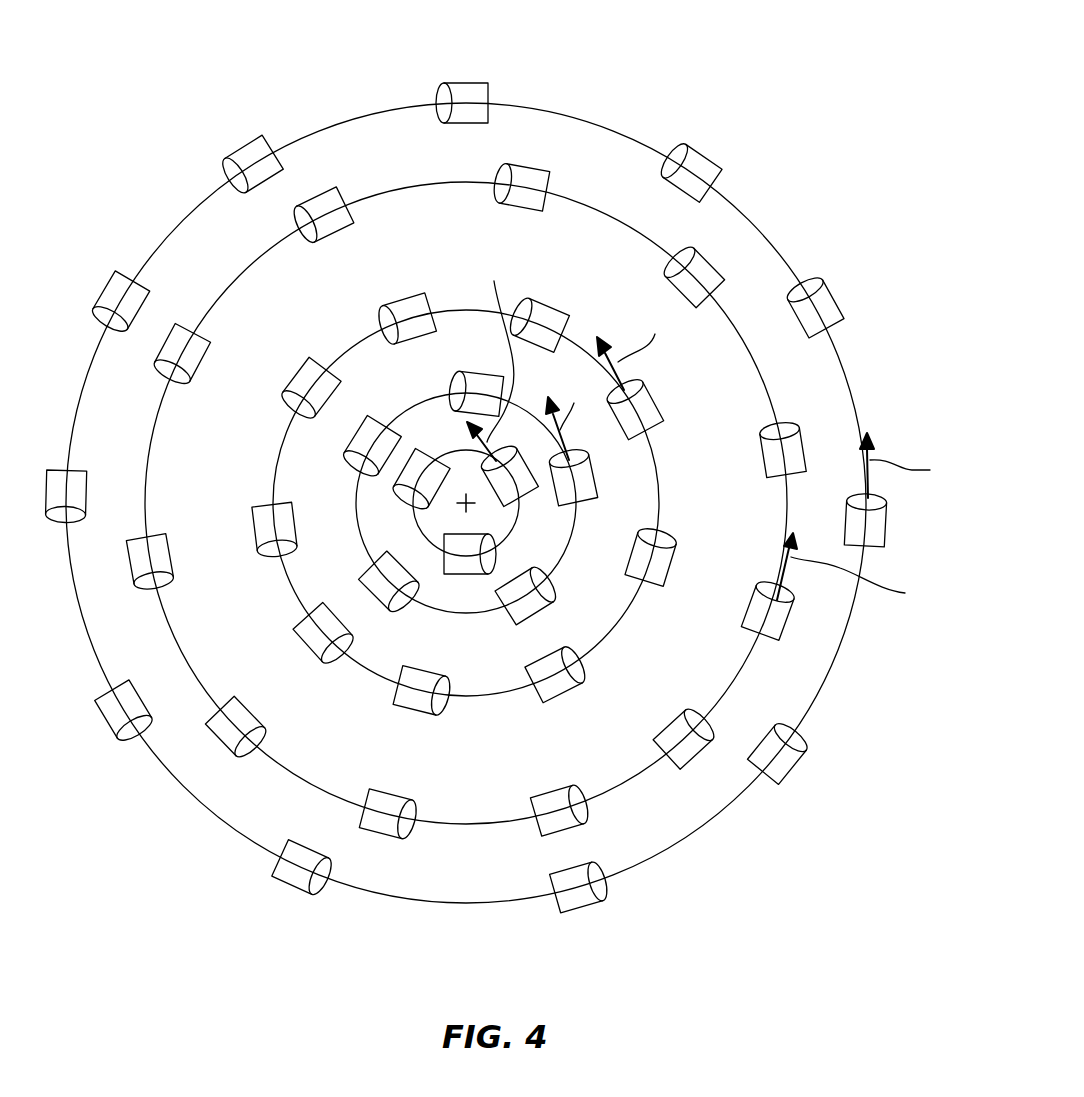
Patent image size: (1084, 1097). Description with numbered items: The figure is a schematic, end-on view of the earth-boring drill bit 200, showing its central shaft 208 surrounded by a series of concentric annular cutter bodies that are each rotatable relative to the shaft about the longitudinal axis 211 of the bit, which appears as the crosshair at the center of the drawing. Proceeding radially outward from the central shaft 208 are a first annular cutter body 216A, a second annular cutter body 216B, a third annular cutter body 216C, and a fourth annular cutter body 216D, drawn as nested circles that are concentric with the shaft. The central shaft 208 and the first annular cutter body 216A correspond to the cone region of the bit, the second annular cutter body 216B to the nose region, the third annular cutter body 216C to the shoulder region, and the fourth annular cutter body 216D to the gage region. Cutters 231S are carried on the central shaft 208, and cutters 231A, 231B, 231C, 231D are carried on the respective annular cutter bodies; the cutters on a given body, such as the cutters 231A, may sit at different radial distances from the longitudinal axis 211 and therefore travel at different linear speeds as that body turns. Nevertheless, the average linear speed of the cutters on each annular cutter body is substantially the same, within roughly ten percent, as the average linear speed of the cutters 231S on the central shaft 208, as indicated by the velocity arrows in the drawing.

The drill bit 200 is at (646, 101).
The central shaft 208 is at (411, 520).
The longitudinal axis 211 is at (462, 496).
The cutters on the central shaft 231S is at (398, 492).
The first annular cutter body 216A is at (563, 562).
The cutters on the first annular cutter body 231A is at (518, 610).
The second annular cutter body 216B is at (288, 597).
The cutters on the second annular cutter body 231B is at (545, 683).
The third annular cutter body 216C is at (310, 786).
The cutters on the third annular cutter body 231C is at (578, 802).
The fourth annular cutter body 216D is at (677, 833).
The cutters on the fourth annular cutter body 231D is at (777, 753).